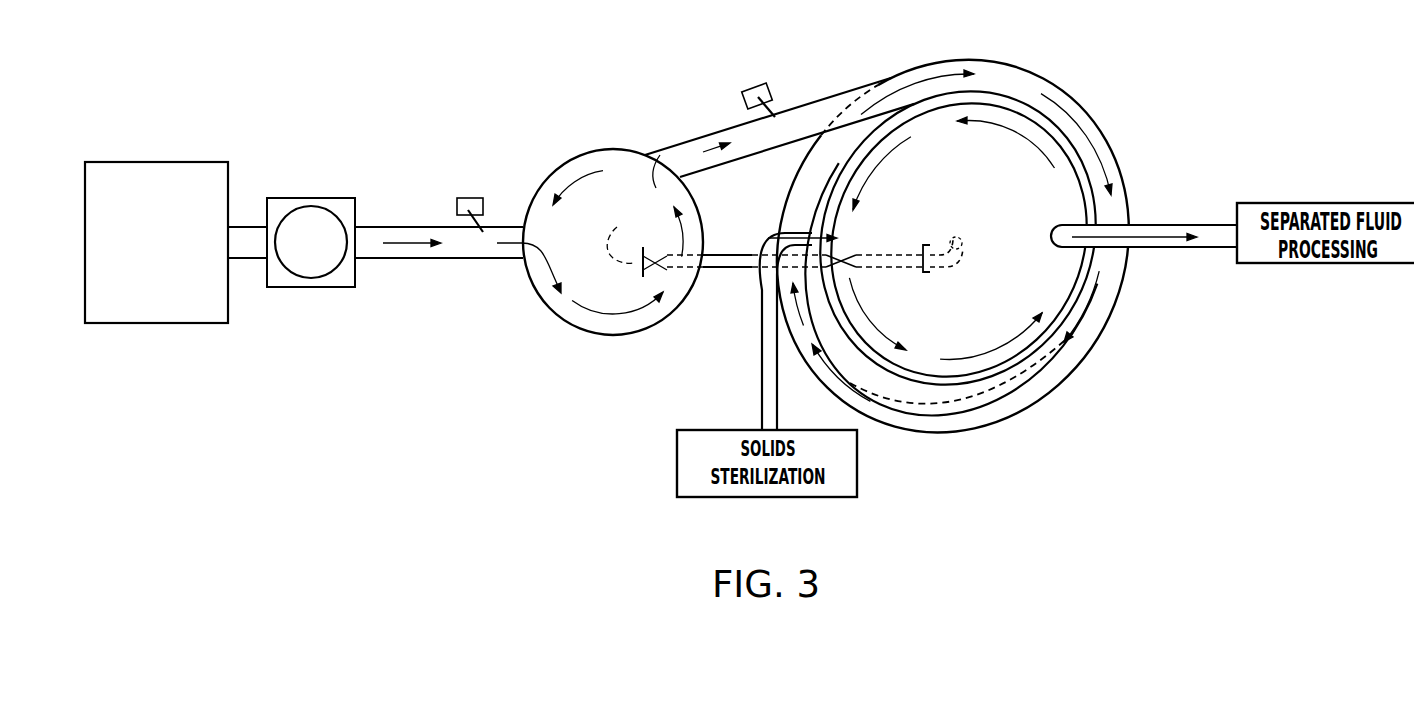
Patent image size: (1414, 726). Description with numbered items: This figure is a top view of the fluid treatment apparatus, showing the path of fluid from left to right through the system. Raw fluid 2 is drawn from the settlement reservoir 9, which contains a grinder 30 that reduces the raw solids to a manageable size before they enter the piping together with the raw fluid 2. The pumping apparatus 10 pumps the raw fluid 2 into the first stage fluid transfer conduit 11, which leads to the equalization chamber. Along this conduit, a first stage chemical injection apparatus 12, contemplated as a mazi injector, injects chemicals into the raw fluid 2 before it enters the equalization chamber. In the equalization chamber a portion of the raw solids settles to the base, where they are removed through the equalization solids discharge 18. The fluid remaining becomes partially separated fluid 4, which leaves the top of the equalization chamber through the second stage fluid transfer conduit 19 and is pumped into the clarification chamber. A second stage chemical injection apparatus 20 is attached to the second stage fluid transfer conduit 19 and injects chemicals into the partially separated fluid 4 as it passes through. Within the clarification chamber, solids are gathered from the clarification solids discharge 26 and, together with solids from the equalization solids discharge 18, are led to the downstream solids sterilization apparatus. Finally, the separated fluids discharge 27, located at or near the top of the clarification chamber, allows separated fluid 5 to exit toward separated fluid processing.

The raw fluid 2 is at (392, 245).
The partially separated fluid 4 is at (770, 232).
The separated fluid 5 is at (1165, 248).
The settlement reservoir 9 is at (147, 323).
The pumping apparatus 10 is at (306, 198).
The first stage fluid transfer conduit 11 is at (407, 258).
The first stage chemical injection apparatus 12 is at (465, 198).
The equalization solids discharge 18 is at (617, 240).
The second stage fluid transfer conduit 19 is at (675, 142).
The second stage chemical injection apparatus 20 is at (755, 85).
The clarification solids discharge 26 is at (953, 237).
The separated fluids discharge 27 is at (1180, 202).
The grinder 30 is at (342, 287).